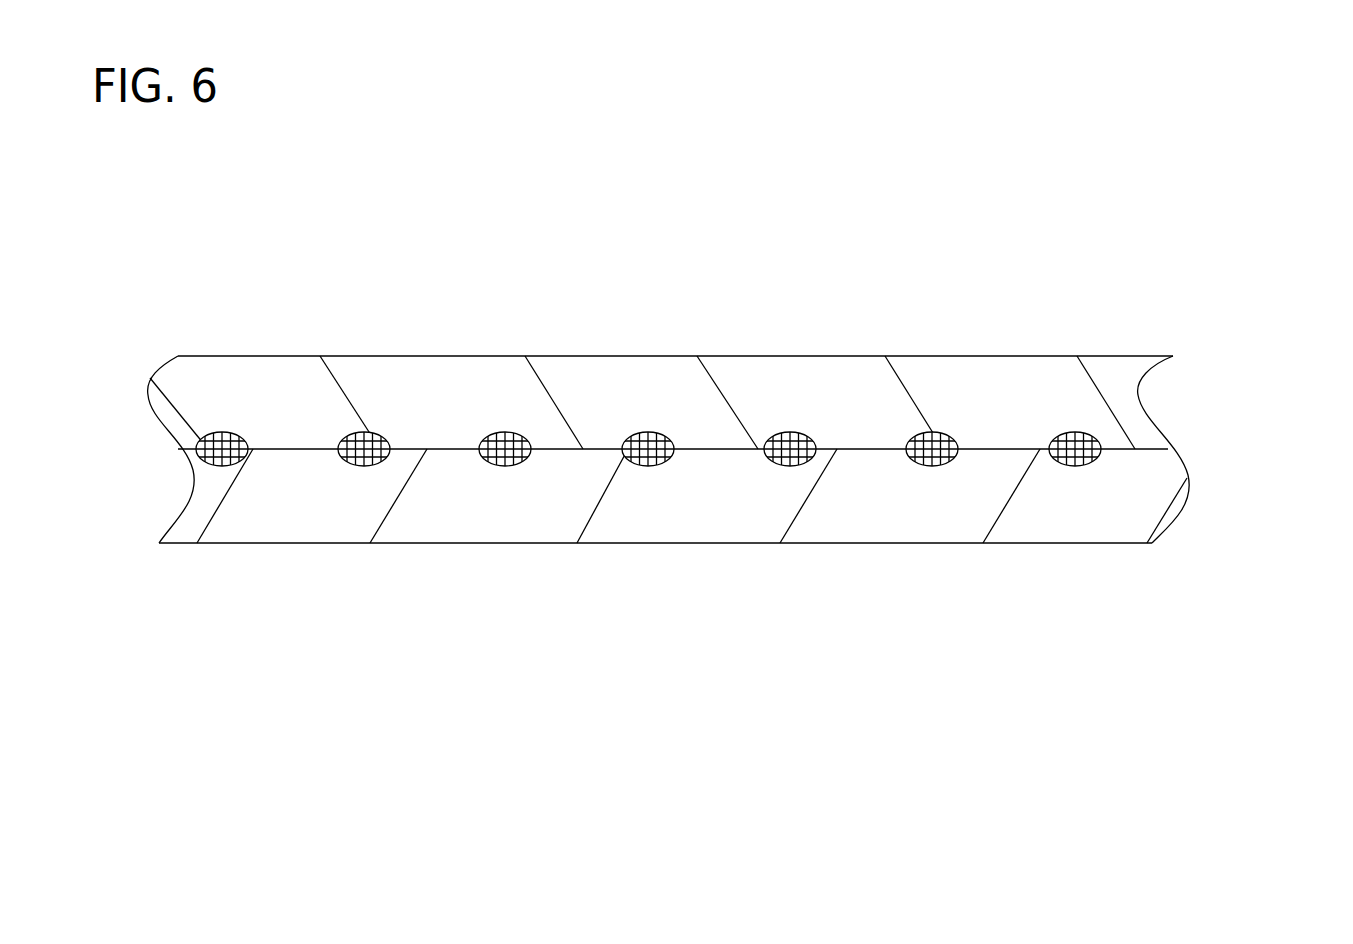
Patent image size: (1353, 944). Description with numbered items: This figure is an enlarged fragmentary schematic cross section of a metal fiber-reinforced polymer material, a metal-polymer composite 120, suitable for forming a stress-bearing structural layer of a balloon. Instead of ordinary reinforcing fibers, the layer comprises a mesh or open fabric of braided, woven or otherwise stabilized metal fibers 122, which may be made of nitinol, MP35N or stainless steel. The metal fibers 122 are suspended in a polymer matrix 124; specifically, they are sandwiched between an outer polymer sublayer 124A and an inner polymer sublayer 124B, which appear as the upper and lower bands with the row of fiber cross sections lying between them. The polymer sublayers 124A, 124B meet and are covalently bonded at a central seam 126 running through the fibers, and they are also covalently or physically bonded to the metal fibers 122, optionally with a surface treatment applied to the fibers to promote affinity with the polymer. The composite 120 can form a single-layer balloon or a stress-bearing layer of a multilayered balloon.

The metal-polymer composite 120 is at (252, 735).
The metal fibers 122 is at (797, 435).
The polymer matrix 124 is at (1248, 357).
The outer polymer sublayer 124A is at (1038, 378).
The inner polymer sublayer 124B is at (953, 520).
The central seam 126 is at (275, 449).